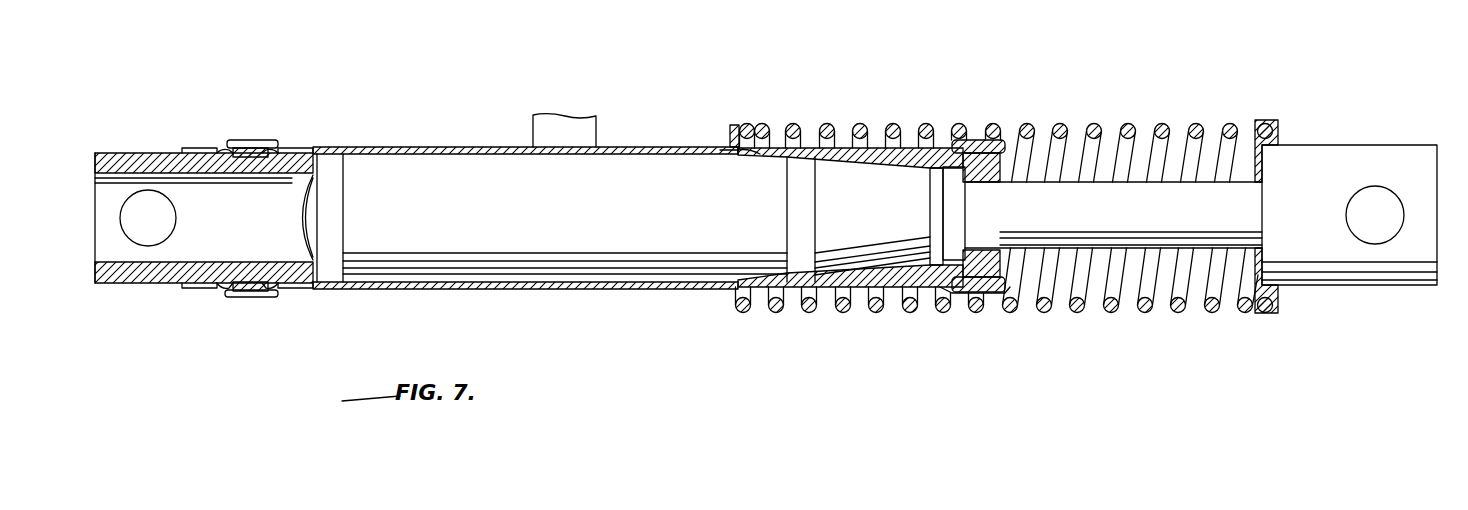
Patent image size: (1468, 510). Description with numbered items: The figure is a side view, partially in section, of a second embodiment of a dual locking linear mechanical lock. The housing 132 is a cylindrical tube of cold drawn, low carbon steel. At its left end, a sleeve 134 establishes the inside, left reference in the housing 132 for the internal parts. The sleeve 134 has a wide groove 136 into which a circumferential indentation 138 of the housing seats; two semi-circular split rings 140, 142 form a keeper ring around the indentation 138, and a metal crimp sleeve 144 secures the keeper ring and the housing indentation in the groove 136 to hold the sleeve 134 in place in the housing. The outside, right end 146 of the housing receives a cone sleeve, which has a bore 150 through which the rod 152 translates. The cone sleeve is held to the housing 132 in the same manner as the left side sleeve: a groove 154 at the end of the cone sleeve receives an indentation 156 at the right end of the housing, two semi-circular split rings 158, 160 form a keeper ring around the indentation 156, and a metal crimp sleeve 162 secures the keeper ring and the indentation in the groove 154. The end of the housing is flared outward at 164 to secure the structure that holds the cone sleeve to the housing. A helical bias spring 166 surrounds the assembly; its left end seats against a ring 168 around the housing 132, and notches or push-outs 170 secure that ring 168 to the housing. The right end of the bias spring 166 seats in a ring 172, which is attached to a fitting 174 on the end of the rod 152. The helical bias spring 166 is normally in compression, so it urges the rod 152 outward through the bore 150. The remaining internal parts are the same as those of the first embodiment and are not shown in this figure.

The housing 132 is at (393, 147).
The sleeve 134 is at (178, 152).
The wide groove 136 is at (262, 160).
The circumferential indentation 138 is at (258, 148).
The semi-circular split ring 140 is at (245, 145).
The semi-circular split ring 142 is at (256, 297).
The metal crimp sleeve 144 is at (242, 293).
The outside end 146 is at (908, 135).
The bore 150 is at (985, 183).
The rod 152 is at (1258, 212).
The groove 154 is at (980, 145).
The indentation 156 is at (985, 293).
The semi-circular split ring 158 is at (985, 140).
The semi-circular split ring 160 is at (992, 295).
The metal crimp sleeve 162 is at (965, 293).
The flared end 164 is at (1012, 145).
The helical bias spring 166 is at (1163, 122).
The ring 168 is at (730, 124).
The notches or push-outs 170 is at (735, 150).
The ring 172 is at (1275, 120).
The fitting 174 is at (1368, 150).